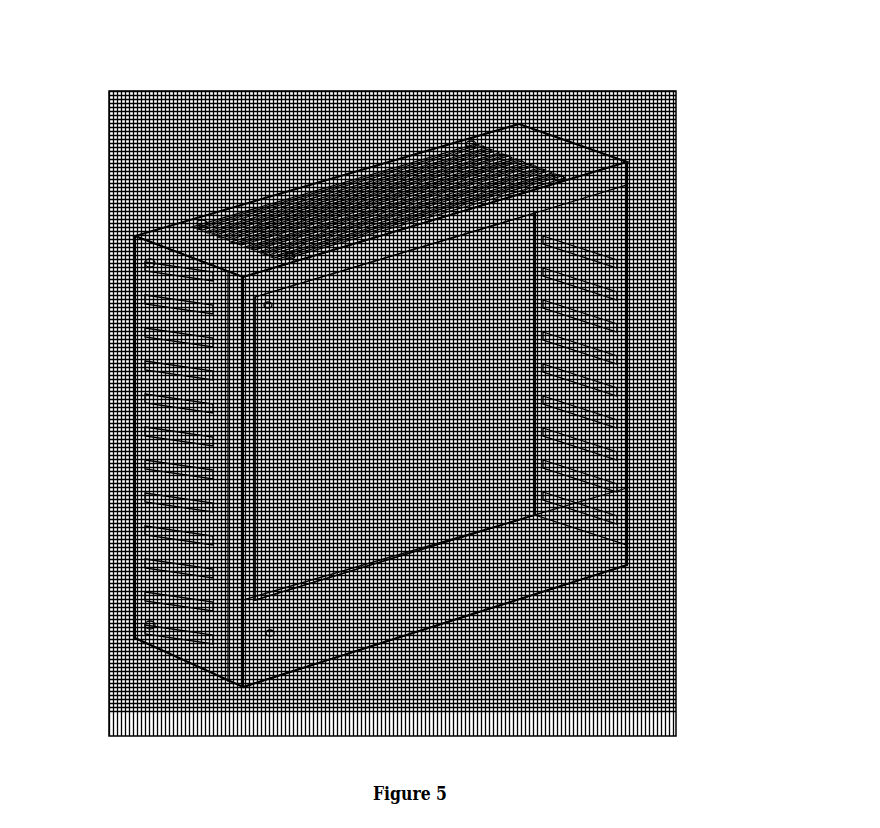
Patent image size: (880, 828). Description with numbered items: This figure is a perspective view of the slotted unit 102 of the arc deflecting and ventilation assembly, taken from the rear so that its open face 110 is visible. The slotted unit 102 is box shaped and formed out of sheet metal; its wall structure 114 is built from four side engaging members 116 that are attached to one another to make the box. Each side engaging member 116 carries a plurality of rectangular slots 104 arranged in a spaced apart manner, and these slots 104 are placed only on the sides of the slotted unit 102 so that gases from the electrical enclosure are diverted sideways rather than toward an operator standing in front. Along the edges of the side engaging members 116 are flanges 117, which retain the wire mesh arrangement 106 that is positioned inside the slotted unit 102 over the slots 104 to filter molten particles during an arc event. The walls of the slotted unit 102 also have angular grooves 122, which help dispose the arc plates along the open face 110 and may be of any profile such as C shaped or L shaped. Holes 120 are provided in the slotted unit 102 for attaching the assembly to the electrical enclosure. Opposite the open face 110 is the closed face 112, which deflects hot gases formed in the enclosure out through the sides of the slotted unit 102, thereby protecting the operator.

The slotted unit 102 is at (637, 160).
The slots 104 is at (270, 196).
The wire mesh arrangement 106 is at (143, 318).
The open face 110 is at (574, 225).
The closed face 112 is at (494, 433).
The wall structure 114 is at (639, 490).
The side engaging members 116 is at (161, 625).
The flanges 117 is at (389, 261).
The holes 120 is at (473, 136).
The angular grooves 122 is at (214, 386).